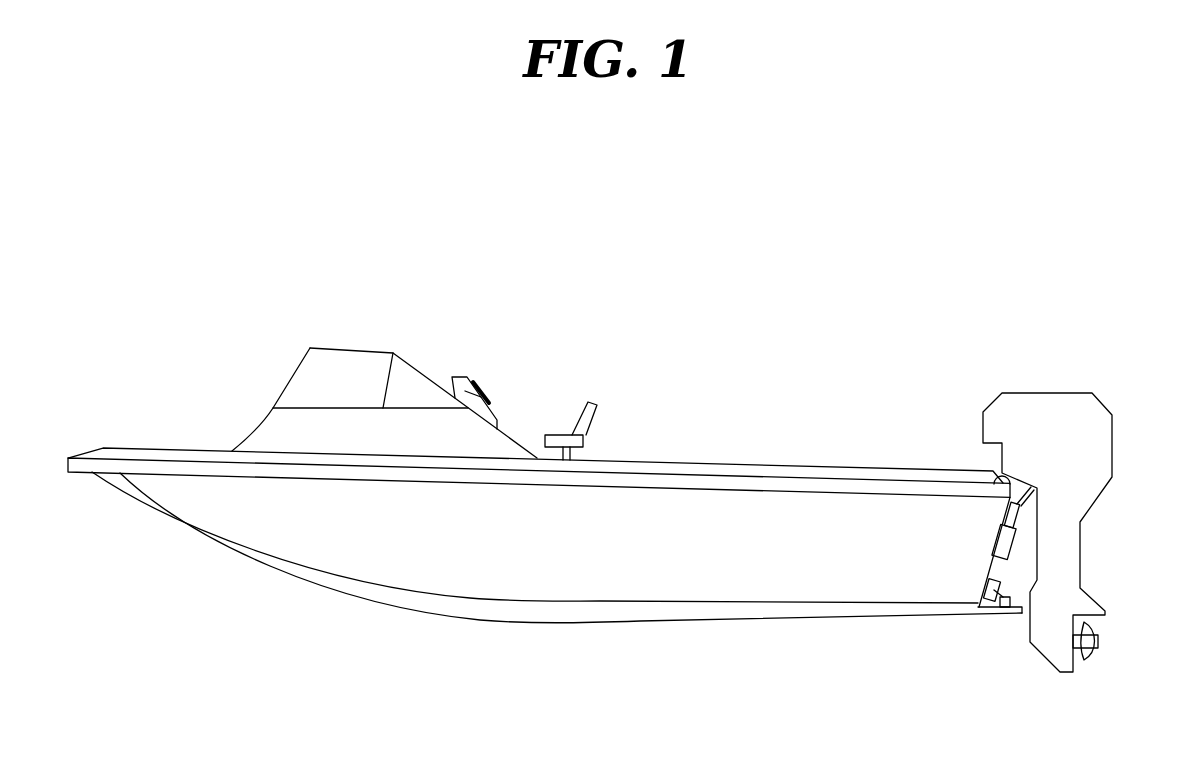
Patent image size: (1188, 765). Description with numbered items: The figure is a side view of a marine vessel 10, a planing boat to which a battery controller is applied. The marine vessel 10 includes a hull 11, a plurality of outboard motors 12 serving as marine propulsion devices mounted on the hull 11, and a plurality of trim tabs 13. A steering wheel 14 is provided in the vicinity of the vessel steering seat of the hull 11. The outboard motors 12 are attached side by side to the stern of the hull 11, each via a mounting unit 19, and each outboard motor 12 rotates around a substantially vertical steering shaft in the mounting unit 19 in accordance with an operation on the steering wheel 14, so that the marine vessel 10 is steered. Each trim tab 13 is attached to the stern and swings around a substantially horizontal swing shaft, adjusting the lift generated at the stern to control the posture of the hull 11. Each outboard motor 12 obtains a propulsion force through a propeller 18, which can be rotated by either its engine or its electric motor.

The marine vessel 10 is at (662, 300).
The hull 11 is at (723, 462).
The outboard motor 12 is at (1103, 400).
The trim tab 13 is at (1002, 617).
The steering wheel 14 is at (472, 387).
The propeller 18 is at (1093, 660).
The mounting unit 19 is at (1000, 478).